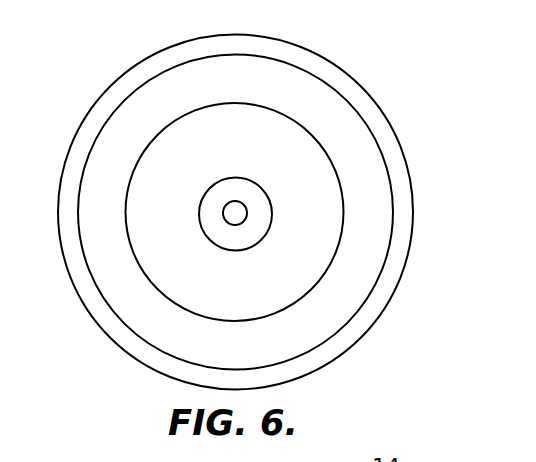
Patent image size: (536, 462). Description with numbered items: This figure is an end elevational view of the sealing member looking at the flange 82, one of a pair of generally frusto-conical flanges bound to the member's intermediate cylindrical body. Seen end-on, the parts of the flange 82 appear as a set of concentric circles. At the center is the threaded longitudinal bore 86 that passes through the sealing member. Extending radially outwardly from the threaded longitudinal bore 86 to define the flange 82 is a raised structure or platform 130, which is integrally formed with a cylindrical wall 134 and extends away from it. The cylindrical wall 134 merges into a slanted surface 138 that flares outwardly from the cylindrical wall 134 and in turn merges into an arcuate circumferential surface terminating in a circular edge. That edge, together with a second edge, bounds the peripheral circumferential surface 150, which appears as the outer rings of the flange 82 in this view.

The flange 82 is at (291, 36).
The threaded longitudinal bore 86 is at (244, 203).
The raised structure or platform 130 is at (218, 197).
The cylindrical wall 134 is at (200, 285).
The slanted surface 138 is at (363, 192).
The peripheral circumferential surface 150 is at (345, 87).